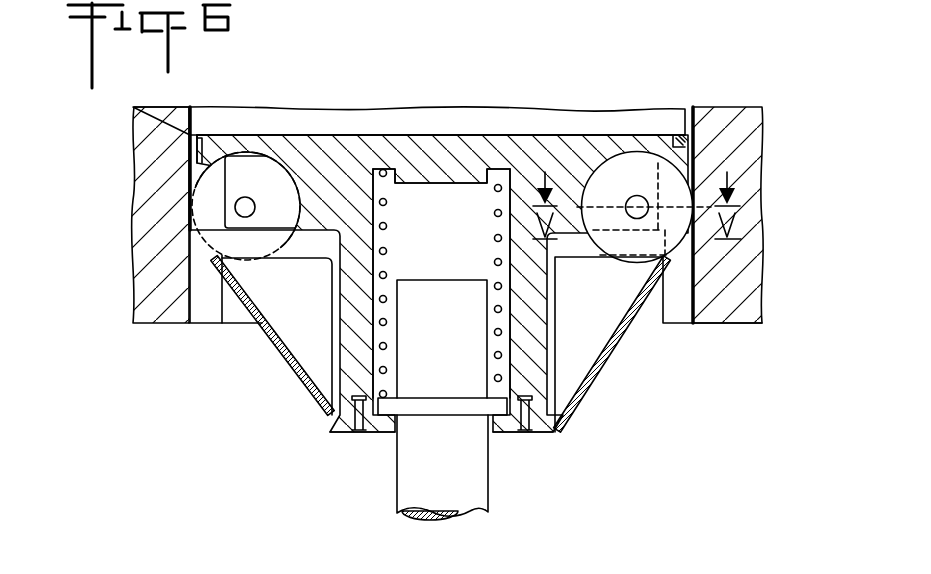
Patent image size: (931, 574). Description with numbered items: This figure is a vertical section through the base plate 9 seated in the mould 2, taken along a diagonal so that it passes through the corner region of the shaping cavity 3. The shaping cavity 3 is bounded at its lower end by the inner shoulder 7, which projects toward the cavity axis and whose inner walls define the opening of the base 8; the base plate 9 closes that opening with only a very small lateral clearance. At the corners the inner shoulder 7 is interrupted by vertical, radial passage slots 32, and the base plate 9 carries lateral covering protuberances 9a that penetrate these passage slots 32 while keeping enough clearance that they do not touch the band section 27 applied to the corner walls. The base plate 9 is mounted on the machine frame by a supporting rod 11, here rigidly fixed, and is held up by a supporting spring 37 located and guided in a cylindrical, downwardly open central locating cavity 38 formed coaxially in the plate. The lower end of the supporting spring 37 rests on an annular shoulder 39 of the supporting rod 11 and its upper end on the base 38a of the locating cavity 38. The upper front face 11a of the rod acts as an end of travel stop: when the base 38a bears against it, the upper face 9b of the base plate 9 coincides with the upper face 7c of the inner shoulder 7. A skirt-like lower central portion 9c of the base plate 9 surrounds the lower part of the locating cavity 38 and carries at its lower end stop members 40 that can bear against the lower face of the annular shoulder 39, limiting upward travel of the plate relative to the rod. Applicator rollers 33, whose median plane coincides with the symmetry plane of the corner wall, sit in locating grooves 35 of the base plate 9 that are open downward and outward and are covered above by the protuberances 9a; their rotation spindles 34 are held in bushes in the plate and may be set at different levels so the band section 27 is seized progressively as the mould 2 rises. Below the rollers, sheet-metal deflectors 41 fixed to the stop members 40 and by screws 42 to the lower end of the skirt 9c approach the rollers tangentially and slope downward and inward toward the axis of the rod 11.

The mould 2 is at (134, 215).
The shaping cavity 3 is at (409, 96).
The inner shoulder 7 is at (215, 311).
The upper face of the inner shoulder 7c is at (137, 180).
The base 8 is at (266, 336).
The base plate 9 is at (442, 245).
The covering protuberances 9a is at (455, 110).
The upper face of base plate 9b is at (441, 93).
The lower central portion 9c is at (411, 428).
The supporting rod 11 is at (470, 475).
The upper front face of supporting rod 11a is at (442, 332).
The band section 27 is at (207, 106).
The passage slots 32 is at (412, 242).
The applicator rollers 33 is at (637, 160).
The rotation spindles 34 is at (643, 234).
The locating grooves 35 is at (609, 245).
The supporting spring 37 is at (441, 284).
The central locating cavity 38 is at (441, 283).
The base of locating cavity 38a is at (441, 135).
The annular shoulder 39 is at (421, 457).
The stop members 40 is at (454, 442).
The deflectors 41 is at (441, 351).
The screws 42 is at (568, 419).